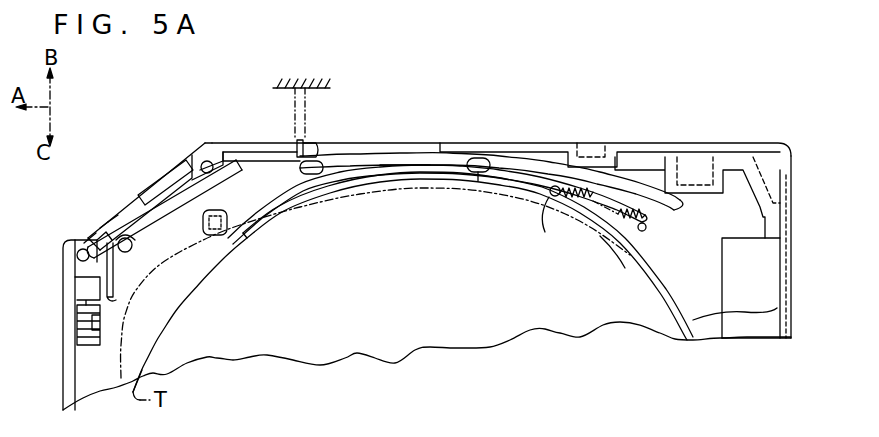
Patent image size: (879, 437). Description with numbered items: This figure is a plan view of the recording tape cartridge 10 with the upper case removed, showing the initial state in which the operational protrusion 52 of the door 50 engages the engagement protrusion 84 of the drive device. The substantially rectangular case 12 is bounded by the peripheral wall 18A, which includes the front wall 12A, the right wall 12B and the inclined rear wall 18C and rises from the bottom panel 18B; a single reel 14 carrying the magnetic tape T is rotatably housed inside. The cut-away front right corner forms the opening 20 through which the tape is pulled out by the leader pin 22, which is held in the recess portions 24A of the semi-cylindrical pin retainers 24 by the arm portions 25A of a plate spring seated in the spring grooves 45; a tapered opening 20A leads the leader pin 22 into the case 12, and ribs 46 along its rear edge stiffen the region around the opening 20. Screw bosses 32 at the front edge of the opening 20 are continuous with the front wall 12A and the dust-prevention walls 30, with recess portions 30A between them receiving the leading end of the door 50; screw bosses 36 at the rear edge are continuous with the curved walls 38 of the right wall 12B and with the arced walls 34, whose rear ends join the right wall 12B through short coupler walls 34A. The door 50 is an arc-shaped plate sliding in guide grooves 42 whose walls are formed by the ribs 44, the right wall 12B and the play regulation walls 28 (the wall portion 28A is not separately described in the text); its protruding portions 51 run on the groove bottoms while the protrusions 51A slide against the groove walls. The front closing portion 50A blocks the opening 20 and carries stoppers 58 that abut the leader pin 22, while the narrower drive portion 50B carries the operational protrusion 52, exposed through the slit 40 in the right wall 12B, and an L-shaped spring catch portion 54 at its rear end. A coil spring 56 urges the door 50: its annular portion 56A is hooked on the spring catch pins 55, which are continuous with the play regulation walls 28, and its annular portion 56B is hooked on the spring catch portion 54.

The recording tape cartridge 10 is at (538, 101).
The case 12 is at (66, 373).
The front wall 12A is at (76, 330).
The right wall 12B is at (238, 143).
The reel 14 is at (627, 324).
The peripheral wall 18A is at (785, 333).
The bottom panel 18B is at (780, 310).
The inclined rear wall 18C is at (762, 268).
The opening 20 is at (170, 172).
The tapered opening 20A is at (116, 218).
The leader pin 22 is at (120, 265).
The pin retainers 24 is at (132, 252).
The recess portions 24A is at (197, 271).
The arm portions 25A is at (150, 360).
The play regulation walls 28 is at (284, 208).
The guide rail portion 28A is at (247, 242).
The dust-prevention walls 30 is at (90, 240).
The recess portions 30A is at (104, 226).
The screw bosses 32 is at (78, 247).
The arced walls 34 is at (258, 150).
The coupler walls 34A is at (310, 152).
The screw bosses 36 is at (203, 160).
The curved walls 38 is at (211, 142).
The slit 40 is at (483, 127).
The guide grooves 42 is at (215, 250).
The ribs 44 is at (172, 160).
The spring grooves 45 is at (76, 279).
The ribs 46 is at (160, 192).
The door 50 is at (362, 156).
The closing portion 50A is at (240, 205).
The drive portion 50B is at (410, 168).
The protruding portions 51 is at (478, 173).
The protrusions 51A is at (483, 181).
The operational protrusion 52 is at (300, 187).
The spring catch portion 54 is at (645, 233).
The spring catch pins 55 is at (553, 197).
The coil spring 56 is at (592, 216).
The annular portion 56A is at (542, 228).
The annular portion 56B is at (615, 258).
The stoppers 58 is at (112, 216).
The engagement protrusion 84 is at (312, 100).